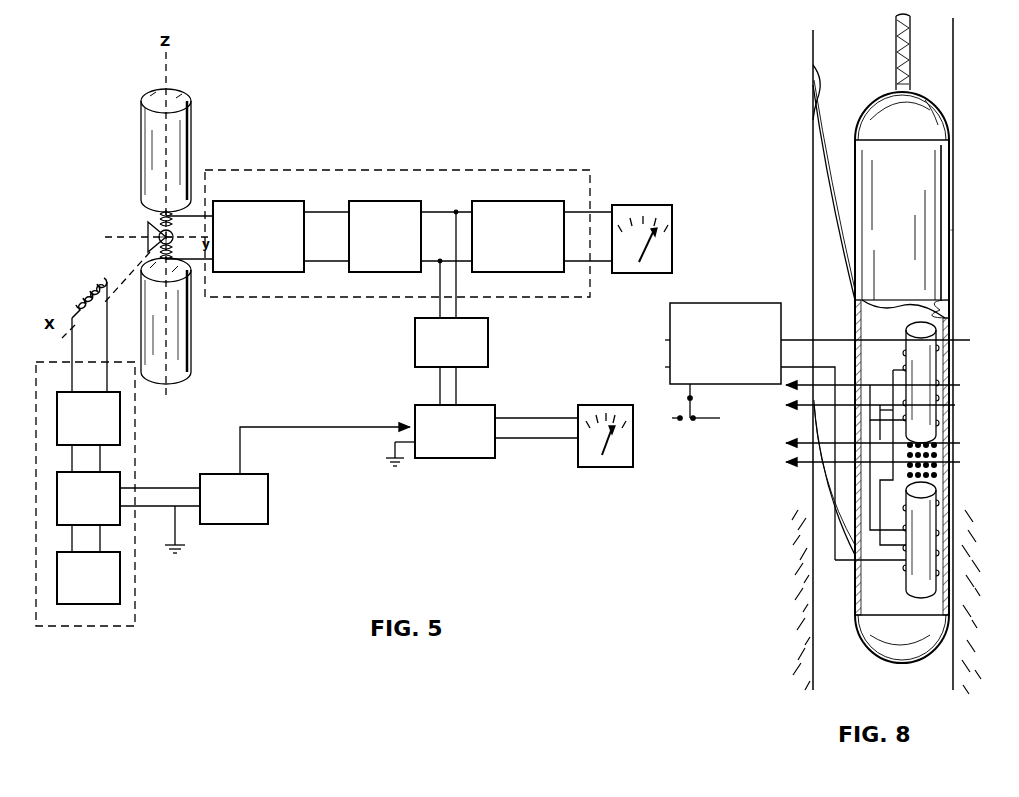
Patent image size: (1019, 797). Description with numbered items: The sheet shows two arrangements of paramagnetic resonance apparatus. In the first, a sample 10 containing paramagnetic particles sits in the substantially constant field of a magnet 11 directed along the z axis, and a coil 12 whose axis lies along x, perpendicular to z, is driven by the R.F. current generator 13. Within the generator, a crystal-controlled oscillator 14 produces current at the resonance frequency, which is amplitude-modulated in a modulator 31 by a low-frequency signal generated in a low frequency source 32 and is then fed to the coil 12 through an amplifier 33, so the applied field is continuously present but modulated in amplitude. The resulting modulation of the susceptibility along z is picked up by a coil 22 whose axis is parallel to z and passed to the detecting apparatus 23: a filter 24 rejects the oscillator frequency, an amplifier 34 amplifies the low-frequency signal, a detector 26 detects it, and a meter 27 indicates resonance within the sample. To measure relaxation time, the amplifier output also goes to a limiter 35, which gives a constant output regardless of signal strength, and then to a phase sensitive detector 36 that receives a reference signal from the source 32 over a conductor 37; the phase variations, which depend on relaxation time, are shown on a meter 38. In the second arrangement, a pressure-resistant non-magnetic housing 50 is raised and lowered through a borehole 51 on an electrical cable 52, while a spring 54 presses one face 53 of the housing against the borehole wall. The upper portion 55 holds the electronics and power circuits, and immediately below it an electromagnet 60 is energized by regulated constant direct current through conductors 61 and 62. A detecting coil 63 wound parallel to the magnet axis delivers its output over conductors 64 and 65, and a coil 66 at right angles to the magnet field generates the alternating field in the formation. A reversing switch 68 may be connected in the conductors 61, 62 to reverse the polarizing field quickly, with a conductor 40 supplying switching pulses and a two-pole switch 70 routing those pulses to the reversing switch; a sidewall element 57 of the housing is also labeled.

In FIG. 5, the sample 10 is at (152, 225).
In FIG. 5, the magnet 11 is at (191, 122).
In FIG. 5, the coil 12 is at (90, 280).
In FIG. 5, the R.F. current generator 13 is at (36, 450).
In FIG. 5, the crystal-controlled oscillator 14 is at (57, 583).
In FIG. 5, the coil 22 is at (160, 210).
In FIG. 5, the detecting apparatus 23 is at (340, 170).
In FIG. 5, the filter 24 is at (265, 201).
In FIG. 5, the detector 26 is at (487, 201).
In FIG. 5, the meter 27 is at (628, 205).
In FIG. 5, the modulator 31 is at (57, 504).
In FIG. 5, the low frequency source 32 is at (270, 508).
In FIG. 5, the amplifier 33 is at (57, 412).
In FIG. 5, the amplifier 34 is at (382, 201).
In FIG. 5, the limiter 35 is at (488, 342).
In FIG. 5, the phase sensitive detector 36 is at (480, 405).
In FIG. 5, the conductor 37 is at (302, 425).
In FIG. 5, the meter 38 is at (584, 405).
In FIG. 5, the conductor 40 is at (708, 418).
In FIG. 8, the housing 50 is at (949, 215).
In FIG. 8, the borehole 51 is at (816, 70).
In FIG. 8, the electrical cable 52 is at (910, 58).
In FIG. 8, the face 53 is at (955, 285).
In FIG. 8, the spring 54 is at (830, 205).
In FIG. 8, the upper portion 55 is at (906, 204).
In FIG. 8, the housing wall 57 is at (1006, 250).
In FIG. 8, the electromagnet 60 is at (940, 375).
In FIG. 5, the conductor 61 is at (660, 340).
In FIG. 8, the conductor 61 is at (826, 337).
In FIG. 5, the conductor 62 is at (660, 367).
In FIG. 8, the conductor 62 is at (826, 365).
In FIG. 8, the detecting coil 63 is at (940, 387).
In FIG. 8, the conductor 64 is at (866, 403).
In FIG. 8, the conductor 65 is at (868, 385).
In FIG. 8, the coil 66 is at (938, 460).
In FIG. 5, the reversing switch 68 is at (728, 303).
In FIG. 5, the two-pole switch 70 is at (682, 405).